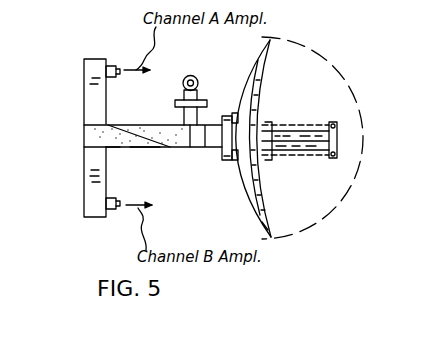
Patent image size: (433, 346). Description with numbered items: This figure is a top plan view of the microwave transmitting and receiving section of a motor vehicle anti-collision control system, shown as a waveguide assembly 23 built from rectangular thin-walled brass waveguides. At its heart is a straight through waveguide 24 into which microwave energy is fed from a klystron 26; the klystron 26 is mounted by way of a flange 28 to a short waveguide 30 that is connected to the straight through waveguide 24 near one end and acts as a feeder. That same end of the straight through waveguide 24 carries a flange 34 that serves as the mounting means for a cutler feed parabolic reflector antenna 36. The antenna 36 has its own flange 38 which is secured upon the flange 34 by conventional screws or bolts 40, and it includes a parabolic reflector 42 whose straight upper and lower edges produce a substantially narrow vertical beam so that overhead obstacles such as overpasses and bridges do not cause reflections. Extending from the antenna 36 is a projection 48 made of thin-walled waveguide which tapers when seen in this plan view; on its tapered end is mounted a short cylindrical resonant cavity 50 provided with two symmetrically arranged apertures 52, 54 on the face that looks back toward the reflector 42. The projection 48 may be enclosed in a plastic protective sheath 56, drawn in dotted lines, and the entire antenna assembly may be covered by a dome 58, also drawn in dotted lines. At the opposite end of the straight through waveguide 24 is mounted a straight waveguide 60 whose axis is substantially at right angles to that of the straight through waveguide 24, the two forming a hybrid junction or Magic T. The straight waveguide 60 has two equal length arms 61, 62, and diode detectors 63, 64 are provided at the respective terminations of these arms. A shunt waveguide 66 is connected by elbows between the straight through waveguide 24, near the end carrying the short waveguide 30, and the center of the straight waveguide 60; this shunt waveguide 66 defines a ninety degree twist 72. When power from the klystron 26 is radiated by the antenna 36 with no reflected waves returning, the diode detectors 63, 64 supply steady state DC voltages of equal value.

The waveguide assembly 23 is at (141, 148).
The straight through waveguide 24 is at (210, 124).
The klystron 26 is at (190, 75).
The flange 28 is at (178, 99).
The short waveguide 30 is at (180, 120).
The flange 34 is at (262, 54).
The cutler feed parabolic reflector antenna 36 is at (261, 213).
The flange 38 is at (237, 164).
The screws or bolts 40 is at (226, 116).
The parabolic reflector 42 is at (264, 77).
The projection 48 is at (278, 147).
The cylindrical resonant cavity 50 is at (338, 141).
The aperture 52 is at (332, 160).
The aperture 54 is at (333, 122).
The protective sheath 56 is at (280, 128).
The dome 58 is at (346, 82).
The straight waveguide 60 is at (84, 124).
The arm 61 is at (88, 190).
The arm 62 is at (88, 84).
The diode detector 63 is at (114, 66).
The diode detector 64 is at (108, 212).
The shunt waveguide 66 is at (116, 150).
The 90° twist 72 is at (170, 149).